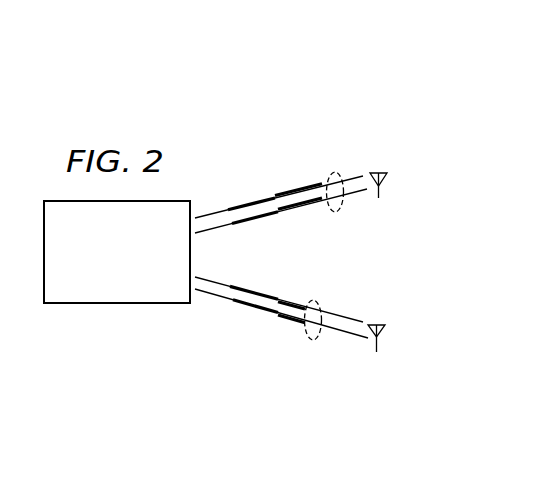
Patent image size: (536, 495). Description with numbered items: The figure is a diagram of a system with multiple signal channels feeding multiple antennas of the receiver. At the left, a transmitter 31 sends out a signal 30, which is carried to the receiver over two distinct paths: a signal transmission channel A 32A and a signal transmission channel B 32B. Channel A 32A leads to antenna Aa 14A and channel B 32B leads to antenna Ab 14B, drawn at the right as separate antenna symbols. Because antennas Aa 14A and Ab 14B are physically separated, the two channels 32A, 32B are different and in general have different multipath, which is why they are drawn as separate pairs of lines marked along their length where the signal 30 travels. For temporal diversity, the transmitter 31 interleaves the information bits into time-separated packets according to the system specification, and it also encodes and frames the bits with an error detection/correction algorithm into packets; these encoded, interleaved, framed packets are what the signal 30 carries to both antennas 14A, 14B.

The transmitter 31 is at (118, 303).
The signal transmission channel A 32A is at (357, 155).
The signal transmission channel B 32B is at (356, 351).
The signal 30 is at (335, 212).
The antenna Aa 14A is at (382, 172).
The antenna Ab 14B is at (378, 325).